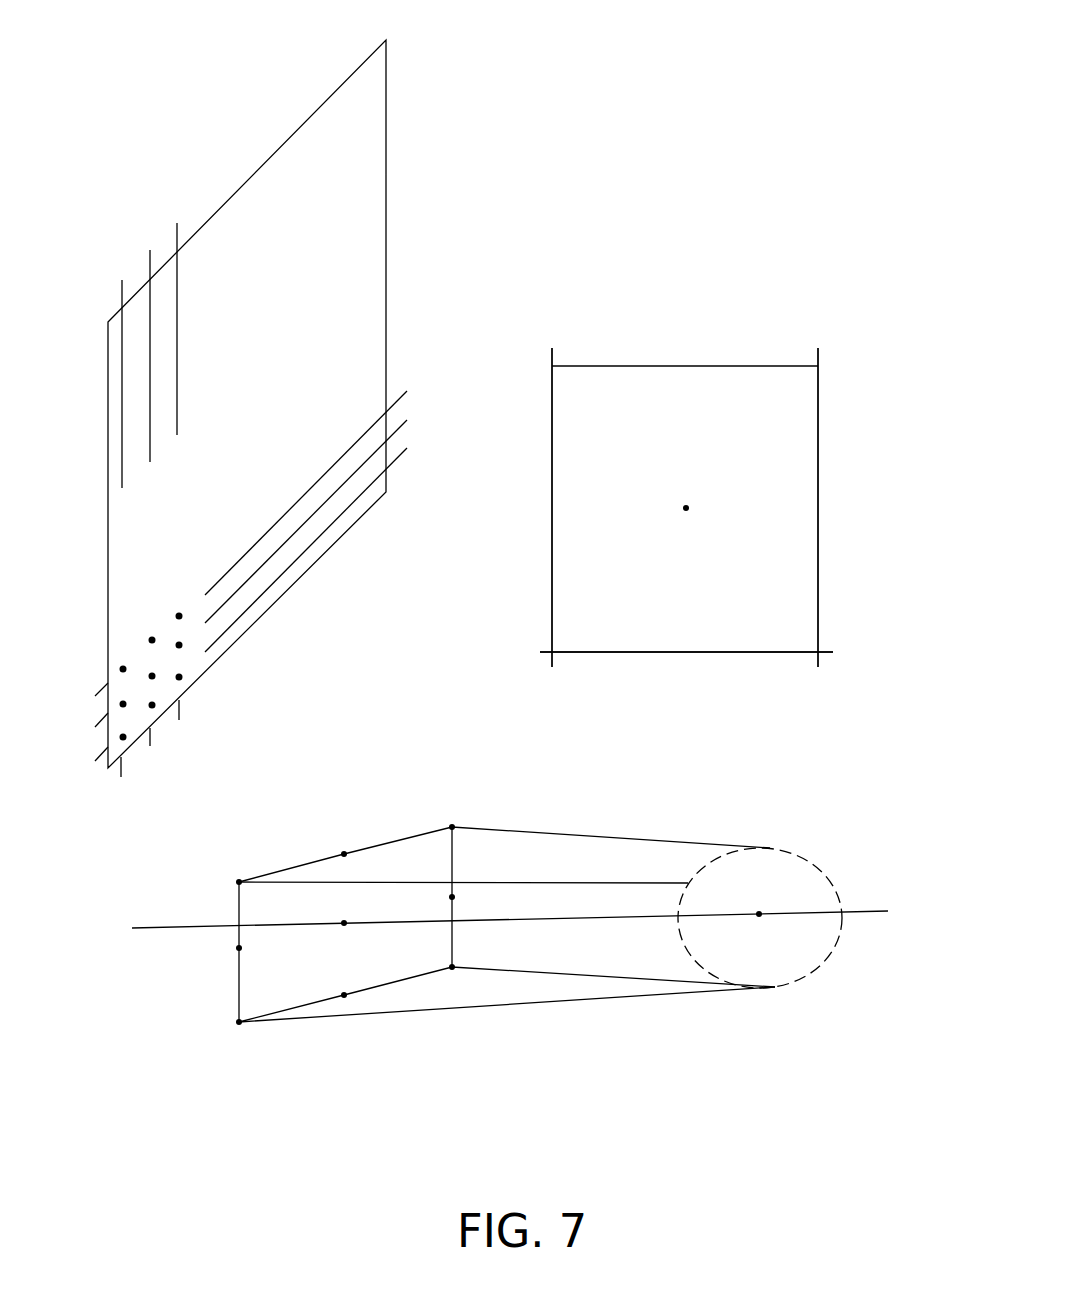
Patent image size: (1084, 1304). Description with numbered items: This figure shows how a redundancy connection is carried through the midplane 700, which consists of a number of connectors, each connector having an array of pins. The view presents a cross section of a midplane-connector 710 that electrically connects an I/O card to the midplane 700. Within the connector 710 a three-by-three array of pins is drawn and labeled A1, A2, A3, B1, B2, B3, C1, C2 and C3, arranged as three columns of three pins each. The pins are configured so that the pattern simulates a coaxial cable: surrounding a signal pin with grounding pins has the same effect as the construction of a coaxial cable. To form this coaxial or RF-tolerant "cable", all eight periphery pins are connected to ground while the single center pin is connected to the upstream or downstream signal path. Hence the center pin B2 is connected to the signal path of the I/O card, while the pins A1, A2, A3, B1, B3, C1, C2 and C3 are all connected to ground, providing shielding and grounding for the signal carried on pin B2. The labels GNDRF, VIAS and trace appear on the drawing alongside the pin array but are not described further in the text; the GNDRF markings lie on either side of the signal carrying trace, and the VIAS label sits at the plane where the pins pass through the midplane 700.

The midplane 700 is at (238, 421).
The midplane-connector 710 is at (531, 923).
The pin A1 is at (242, 1040).
The pin A2 is at (216, 959).
The pin A3 is at (218, 870).
The pin B1 is at (349, 1012).
The pin B2 is at (348, 940).
The pin B3 is at (343, 833).
The pin C1 is at (458, 989).
The pin C2 is at (470, 884).
The pin C3 is at (454, 808).
The ground reference plane GNDRF is at (552, 507).
The vias plane VIAS is at (724, 652).
The signal trace is at (676, 528).